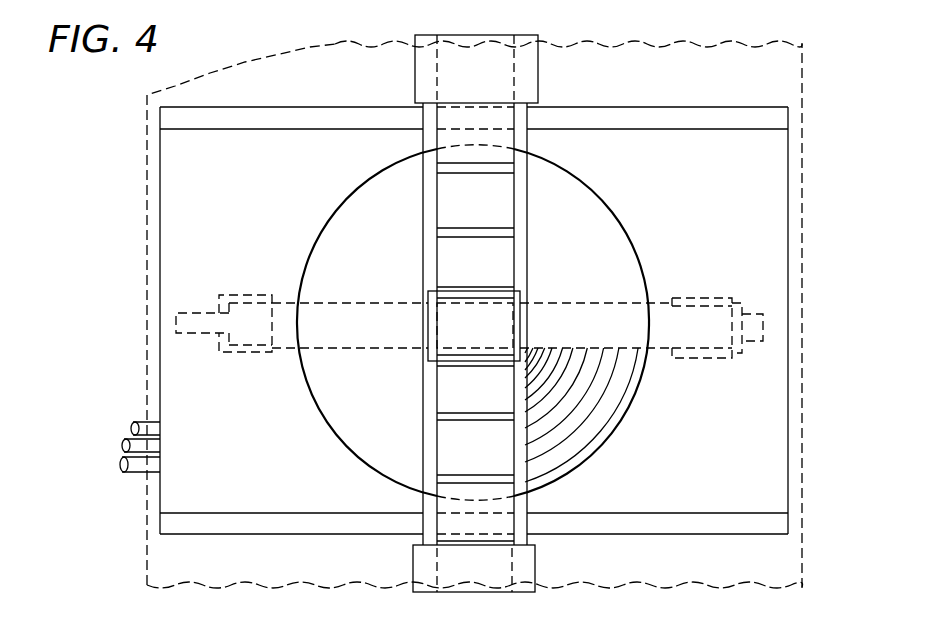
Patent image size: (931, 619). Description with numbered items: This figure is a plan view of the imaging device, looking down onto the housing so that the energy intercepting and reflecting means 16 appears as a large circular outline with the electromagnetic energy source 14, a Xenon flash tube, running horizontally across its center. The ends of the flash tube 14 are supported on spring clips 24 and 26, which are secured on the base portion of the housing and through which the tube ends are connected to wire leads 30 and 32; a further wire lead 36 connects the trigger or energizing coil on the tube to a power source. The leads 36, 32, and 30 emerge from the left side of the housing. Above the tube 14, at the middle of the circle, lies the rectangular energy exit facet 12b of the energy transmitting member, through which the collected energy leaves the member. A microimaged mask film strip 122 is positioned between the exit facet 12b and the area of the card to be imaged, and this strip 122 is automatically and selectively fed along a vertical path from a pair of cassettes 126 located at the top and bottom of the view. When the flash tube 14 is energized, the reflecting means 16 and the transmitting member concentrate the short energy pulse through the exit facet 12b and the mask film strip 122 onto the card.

The cassettes 126 is at (538, 72).
The energy intercepting and reflecting means 16 is at (630, 238).
The electromagnetic energy source 14 is at (658, 348).
The energy exit facet 12b is at (518, 292).
The microimaged mask film strip 122 is at (440, 352).
The spring clip 26 is at (237, 295).
The spring clip 24 is at (697, 298).
The wire lead 36 is at (133, 428).
The wire lead 32 is at (124, 445).
The wire lead 30 is at (122, 463).